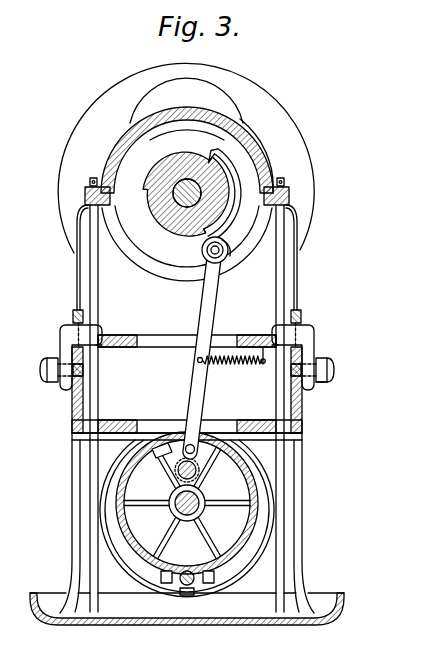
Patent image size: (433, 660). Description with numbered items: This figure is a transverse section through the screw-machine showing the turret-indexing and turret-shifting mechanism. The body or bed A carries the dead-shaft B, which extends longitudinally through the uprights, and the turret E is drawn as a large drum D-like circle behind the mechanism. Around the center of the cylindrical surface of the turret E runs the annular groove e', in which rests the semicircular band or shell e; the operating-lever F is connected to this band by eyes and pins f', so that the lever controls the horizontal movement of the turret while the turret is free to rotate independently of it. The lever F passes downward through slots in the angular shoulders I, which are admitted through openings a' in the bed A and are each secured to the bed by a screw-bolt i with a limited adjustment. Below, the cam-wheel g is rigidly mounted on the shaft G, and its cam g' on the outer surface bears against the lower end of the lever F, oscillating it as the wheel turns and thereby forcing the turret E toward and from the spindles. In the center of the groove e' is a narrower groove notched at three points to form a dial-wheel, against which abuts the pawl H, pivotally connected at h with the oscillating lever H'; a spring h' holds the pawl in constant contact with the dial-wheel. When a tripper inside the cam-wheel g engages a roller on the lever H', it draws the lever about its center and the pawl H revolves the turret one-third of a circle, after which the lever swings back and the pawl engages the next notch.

The drum D is at (78, 131).
The turret E is at (187, 150).
The semicircular band or shell e is at (263, 156).
The annular groove e' is at (187, 246).
The pins f' is at (205, 396).
The dead-shaft B is at (163, 226).
The pawl H is at (233, 195).
The operating-lever F is at (284, 277).
The openings a' is at (188, 276).
The body or bed A is at (302, 409).
The angular shoulders I is at (62, 341).
The screw-bolt i is at (41, 373).
The drum or cam-wheel g is at (217, 503).
The shaft G is at (200, 504).
The cam g' is at (164, 615).
The pivot h is at (198, 354).
The spring h' is at (232, 258).
The oscillating lever H' is at (208, 361).